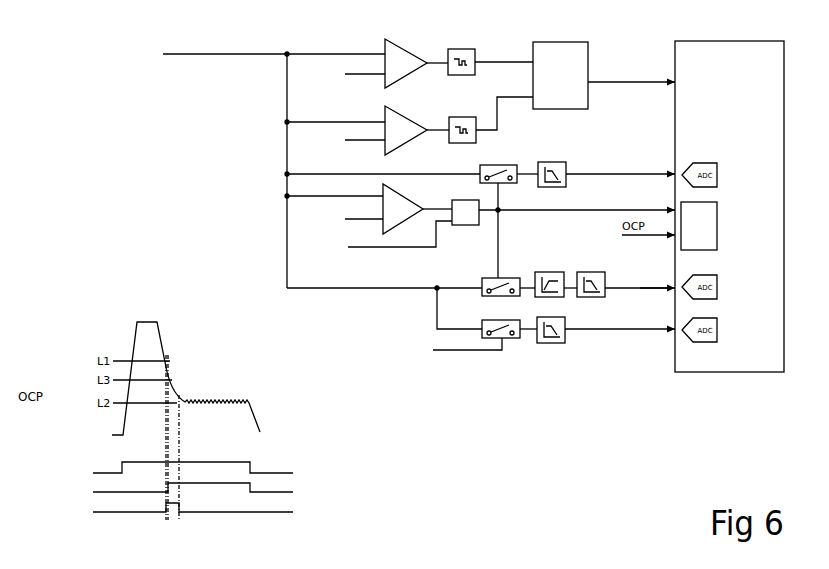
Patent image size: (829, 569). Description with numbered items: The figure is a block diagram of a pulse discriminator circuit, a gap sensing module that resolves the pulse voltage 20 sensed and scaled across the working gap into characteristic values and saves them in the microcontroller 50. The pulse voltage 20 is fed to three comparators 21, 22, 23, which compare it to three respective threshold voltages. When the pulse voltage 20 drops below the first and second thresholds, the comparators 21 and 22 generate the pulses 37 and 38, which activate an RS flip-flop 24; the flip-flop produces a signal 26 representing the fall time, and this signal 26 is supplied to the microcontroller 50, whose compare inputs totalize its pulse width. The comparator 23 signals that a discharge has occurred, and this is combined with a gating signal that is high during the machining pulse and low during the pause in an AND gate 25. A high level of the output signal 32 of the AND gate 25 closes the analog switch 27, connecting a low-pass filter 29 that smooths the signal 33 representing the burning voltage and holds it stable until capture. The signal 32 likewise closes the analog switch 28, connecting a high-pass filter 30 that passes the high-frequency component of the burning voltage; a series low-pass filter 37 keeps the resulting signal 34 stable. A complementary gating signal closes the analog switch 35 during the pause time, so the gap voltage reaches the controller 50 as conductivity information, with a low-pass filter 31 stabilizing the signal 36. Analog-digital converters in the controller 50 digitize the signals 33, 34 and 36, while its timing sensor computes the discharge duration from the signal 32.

The pulse voltage 20 is at (226, 163).
The comparator 21 is at (367, 61).
The comparator 22 is at (368, 128).
The comparator 23 is at (369, 207).
The RS flip-flop 24 is at (560, 65).
The AND gate 25 is at (399, 218).
The signal 26 is at (371, 292).
The analog switch 27 is at (412, 165).
The analog switch 28 is at (411, 278).
The low-pass filter 29 is at (552, 166).
The high-pass filter 30 is at (556, 275).
The low-pass filter 31 is at (551, 321).
The output signal 32 is at (371, 341).
The signal 33 is at (620, 167).
The signal 34 is at (657, 278).
The analog switch 35 is at (460, 322).
The signal 36 is at (620, 322).
The pulse / low-pass filter 37 is at (561, 172).
The pulse 38 is at (491, 120).
The microcontroller 50 is at (729, 206).